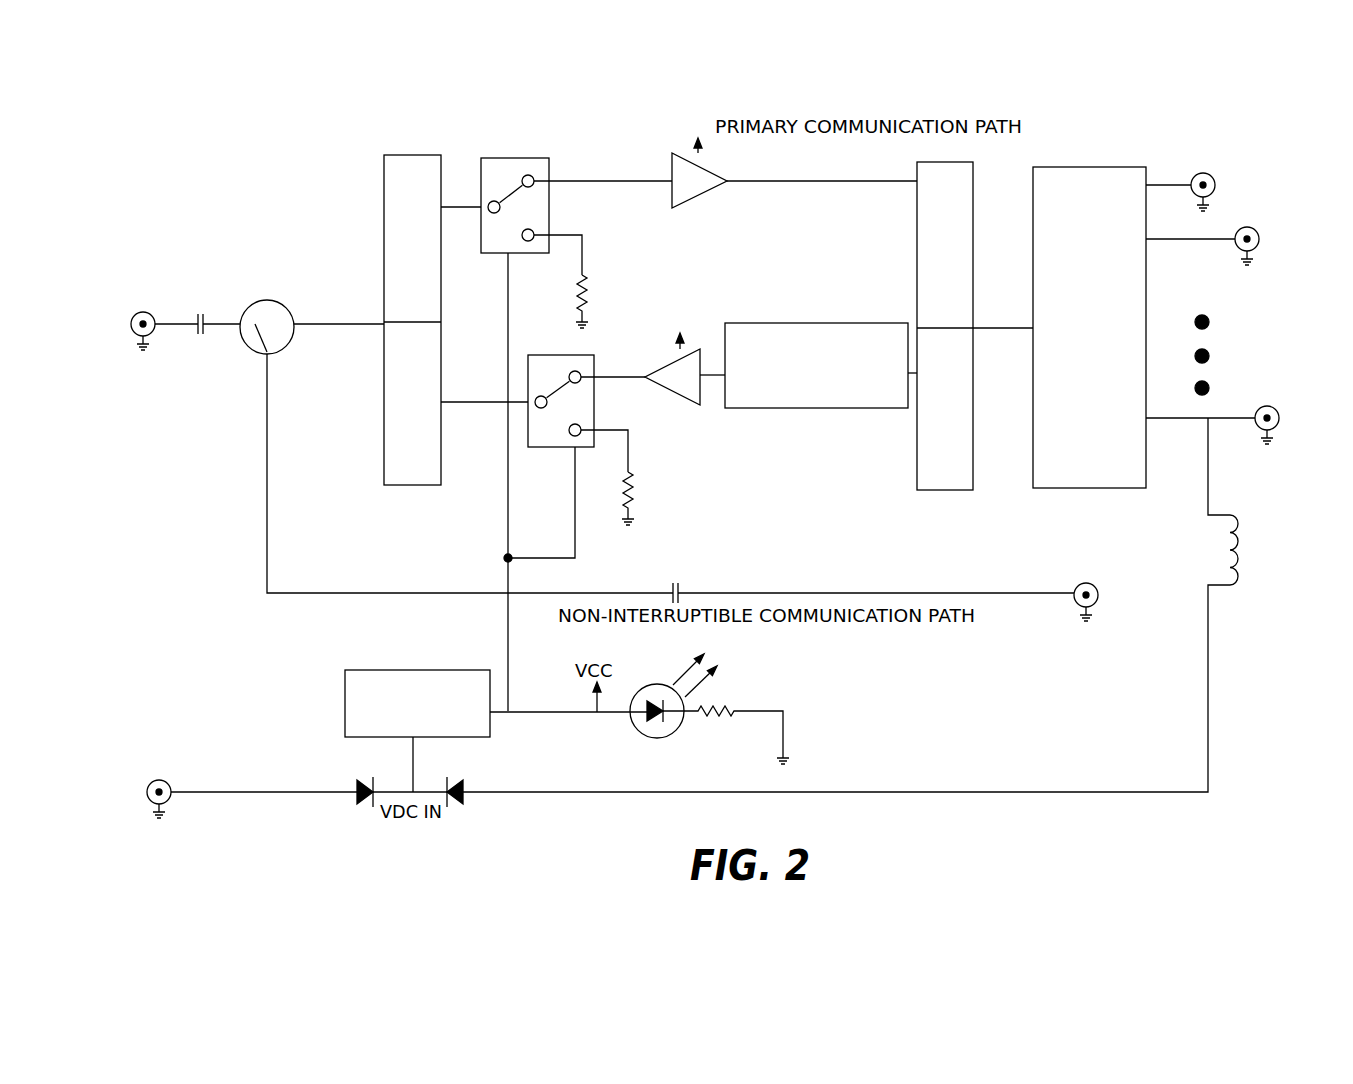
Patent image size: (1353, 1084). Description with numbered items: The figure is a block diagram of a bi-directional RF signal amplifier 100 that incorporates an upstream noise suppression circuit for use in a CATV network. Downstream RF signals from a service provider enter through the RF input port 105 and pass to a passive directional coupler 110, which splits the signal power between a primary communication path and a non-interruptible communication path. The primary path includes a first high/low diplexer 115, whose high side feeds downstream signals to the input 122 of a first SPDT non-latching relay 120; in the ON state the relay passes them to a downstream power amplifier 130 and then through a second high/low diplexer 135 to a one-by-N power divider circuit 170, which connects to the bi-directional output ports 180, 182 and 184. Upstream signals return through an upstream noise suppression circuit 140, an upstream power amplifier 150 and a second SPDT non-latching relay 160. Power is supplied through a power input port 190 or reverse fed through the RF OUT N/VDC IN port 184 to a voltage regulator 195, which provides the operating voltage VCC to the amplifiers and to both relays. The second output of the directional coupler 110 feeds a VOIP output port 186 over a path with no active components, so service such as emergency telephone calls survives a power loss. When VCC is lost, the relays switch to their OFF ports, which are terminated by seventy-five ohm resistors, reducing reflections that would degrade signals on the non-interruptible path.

The signal amplifier 100 is at (330, 228).
The RF input port 105 is at (132, 333).
The directional coupler 110 is at (247, 345).
The first high/low diplexer 115 is at (384, 367).
The first SPDT non-latching relay 120 is at (497, 253).
The input of the non-latching relay 122 is at (462, 197).
The downstream power amplifier 130 is at (668, 198).
The second high/low diplexer 135 is at (917, 217).
The upstream noise suppression circuit 140 is at (823, 408).
The upstream power amplifier 150 is at (665, 387).
The second SPDT non-latching relay 160 is at (560, 448).
The 1×N power divider circuit 170 is at (1060, 489).
The output port 180 is at (1193, 197).
The output port 182 is at (1235, 248).
The RF OUT N/VDC IN port 184 is at (1258, 433).
The VOIP output port 186 is at (1076, 605).
The power input port 190 is at (147, 800).
The voltage regulator 195 is at (343, 717).